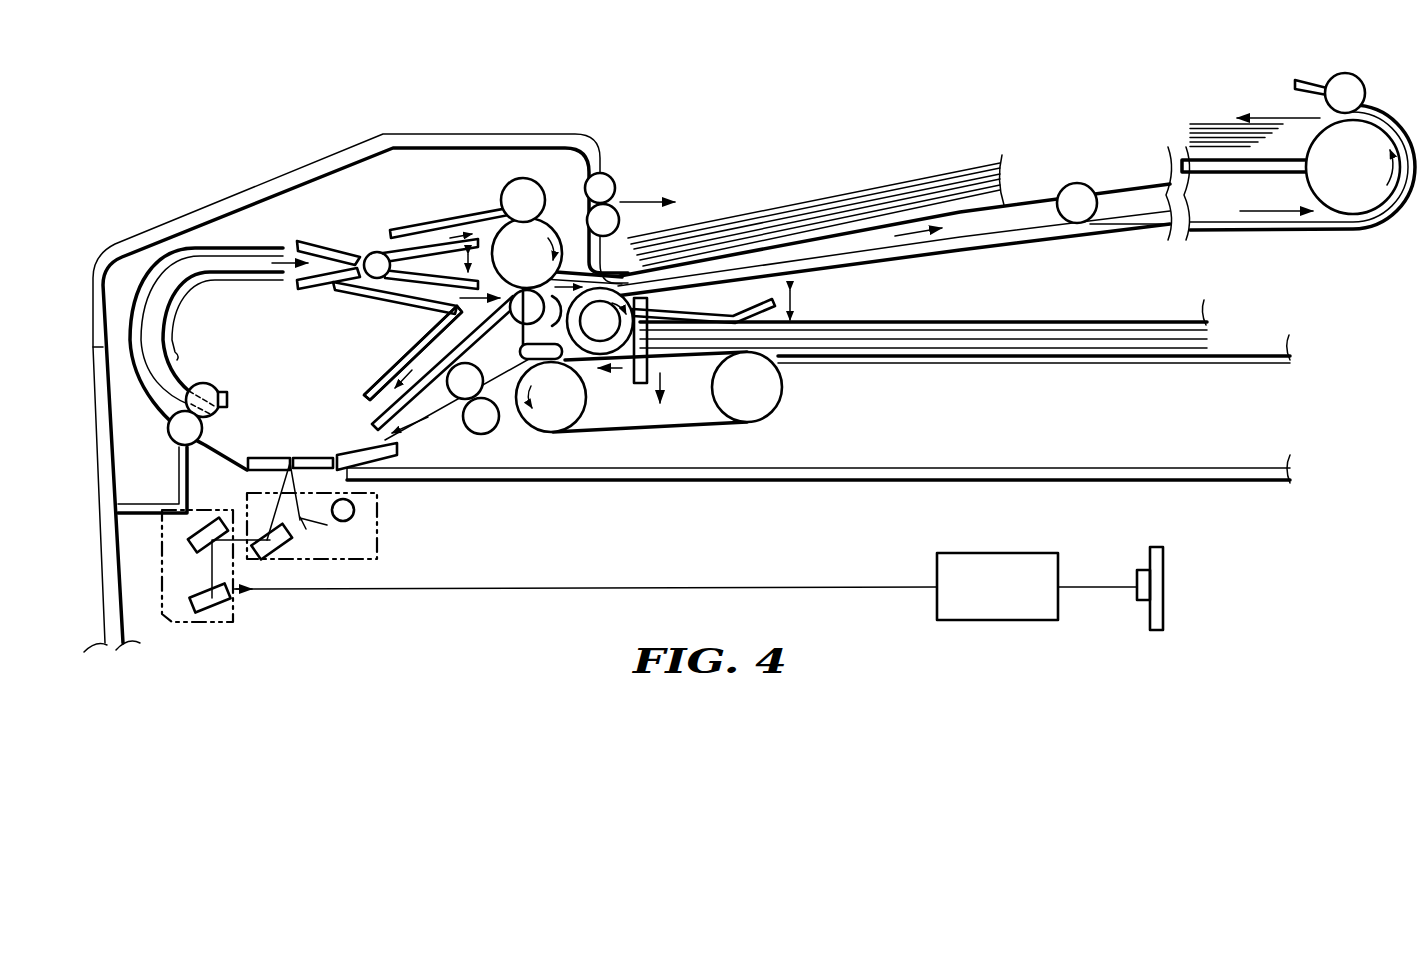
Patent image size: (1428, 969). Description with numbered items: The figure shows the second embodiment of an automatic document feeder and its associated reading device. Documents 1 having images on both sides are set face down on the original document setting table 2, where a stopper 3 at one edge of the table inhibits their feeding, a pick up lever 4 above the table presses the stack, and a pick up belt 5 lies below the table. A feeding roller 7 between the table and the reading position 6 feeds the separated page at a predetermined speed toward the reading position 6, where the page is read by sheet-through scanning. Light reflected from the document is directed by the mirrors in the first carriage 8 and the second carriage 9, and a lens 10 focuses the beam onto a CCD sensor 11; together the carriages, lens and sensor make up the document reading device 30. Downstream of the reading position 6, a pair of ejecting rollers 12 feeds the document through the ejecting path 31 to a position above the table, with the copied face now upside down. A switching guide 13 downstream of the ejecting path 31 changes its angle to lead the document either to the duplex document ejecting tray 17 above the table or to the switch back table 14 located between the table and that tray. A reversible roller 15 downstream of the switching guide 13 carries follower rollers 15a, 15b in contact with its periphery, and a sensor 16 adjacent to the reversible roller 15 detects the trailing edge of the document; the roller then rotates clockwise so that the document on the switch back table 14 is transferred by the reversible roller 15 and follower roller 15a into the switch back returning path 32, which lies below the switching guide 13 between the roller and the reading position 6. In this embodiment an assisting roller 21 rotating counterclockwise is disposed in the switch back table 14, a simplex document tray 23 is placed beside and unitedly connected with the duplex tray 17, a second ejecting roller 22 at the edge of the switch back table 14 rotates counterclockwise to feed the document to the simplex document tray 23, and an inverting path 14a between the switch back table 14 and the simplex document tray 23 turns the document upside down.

The document 1 is at (437, 307).
The original document setting table 2 is at (383, 380).
The stopper 3 is at (440, 228).
The pick up lever 4 is at (667, 314).
The pick up belt 5 is at (647, 432).
The reading position 6 is at (291, 455).
The feeding roller 7 is at (458, 396).
The first carriage 8 is at (378, 528).
The second carriage 9 is at (170, 625).
The lens 10 is at (983, 553).
The CCD sensor 11 is at (1160, 548).
The ejecting rollers 12 is at (223, 407).
The switching guide 13 is at (387, 245).
The switch back table 14 is at (920, 262).
The inverting path 14a is at (1384, 103).
The reversible roller 15 is at (567, 240).
The follower roller 15a is at (516, 335).
The follower roller 15b is at (520, 182).
The sensor 16 is at (607, 390).
The duplex document ejecting tray 17 is at (1078, 183).
The assisting roller 21 is at (1080, 225).
The second ejecting roller 22 is at (1360, 218).
The simplex document tray 23 is at (1256, 173).
The document reading device 30 is at (508, 612).
The ejecting path 31 is at (163, 348).
The switch back returning path 32 is at (400, 348).